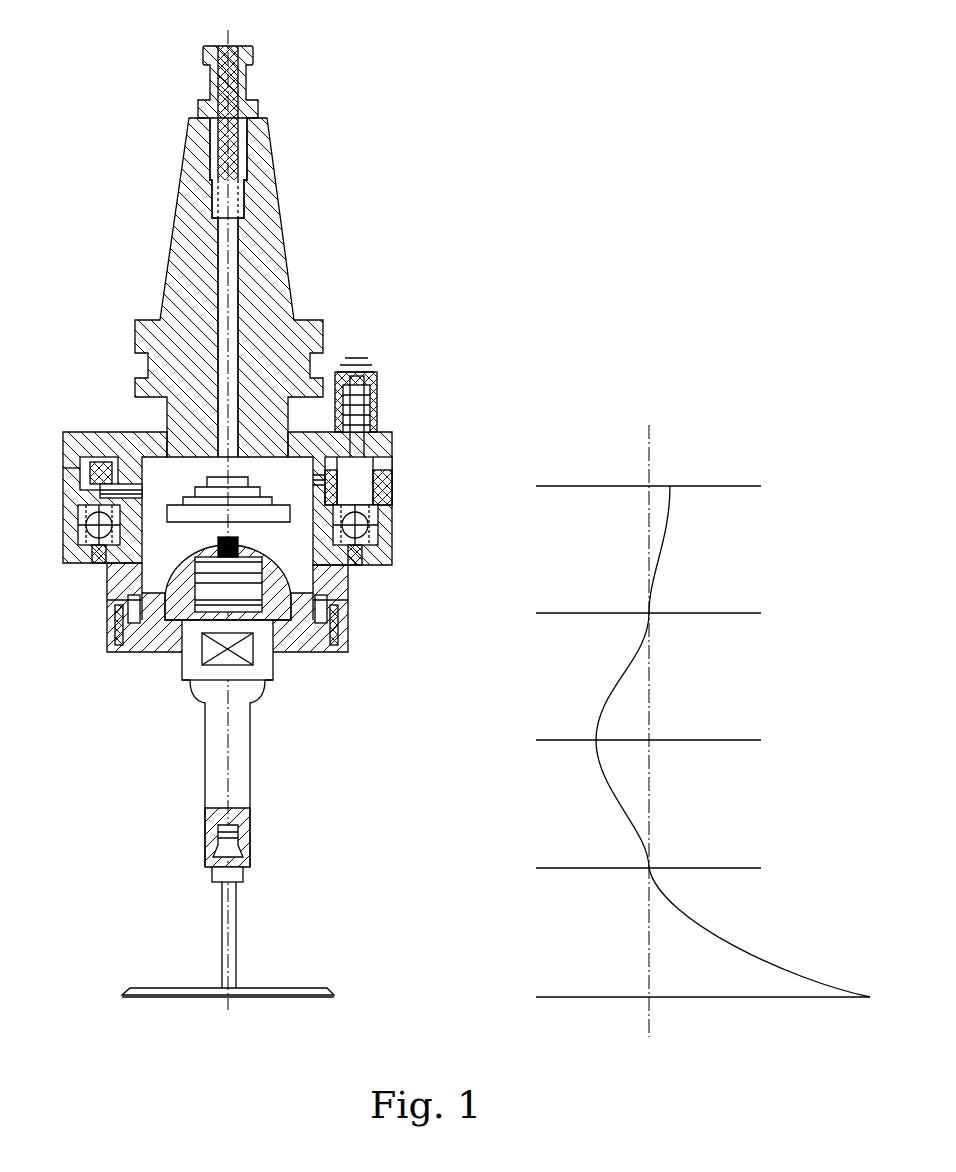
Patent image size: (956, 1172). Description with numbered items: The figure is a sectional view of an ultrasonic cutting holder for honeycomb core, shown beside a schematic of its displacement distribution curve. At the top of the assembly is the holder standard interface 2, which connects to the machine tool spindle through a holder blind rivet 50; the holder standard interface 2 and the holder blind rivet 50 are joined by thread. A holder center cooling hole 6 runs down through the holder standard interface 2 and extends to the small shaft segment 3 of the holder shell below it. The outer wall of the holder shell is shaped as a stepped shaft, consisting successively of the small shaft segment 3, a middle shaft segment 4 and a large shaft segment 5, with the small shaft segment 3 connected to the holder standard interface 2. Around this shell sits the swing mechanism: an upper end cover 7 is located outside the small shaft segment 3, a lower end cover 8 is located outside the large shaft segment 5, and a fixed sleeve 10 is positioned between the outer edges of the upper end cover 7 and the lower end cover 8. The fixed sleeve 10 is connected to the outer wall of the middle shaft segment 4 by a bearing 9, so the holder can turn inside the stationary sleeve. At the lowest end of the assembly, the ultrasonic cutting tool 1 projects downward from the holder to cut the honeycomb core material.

The ultrasonic cutting tool 1 is at (222, 952).
The holder standard interface 2 is at (278, 283).
The small shaft segment 3 is at (127, 448).
The middle shaft segment 4 is at (382, 503).
The large shaft segment 5 is at (130, 583).
The holder center cooling hole 6 is at (230, 392).
The upper end cover 7 is at (92, 442).
The lower end cover 8 is at (77, 550).
The bearing 9 is at (380, 565).
The fixed sleeve 10 is at (338, 505).
The holder blind rivet 50 is at (248, 72).